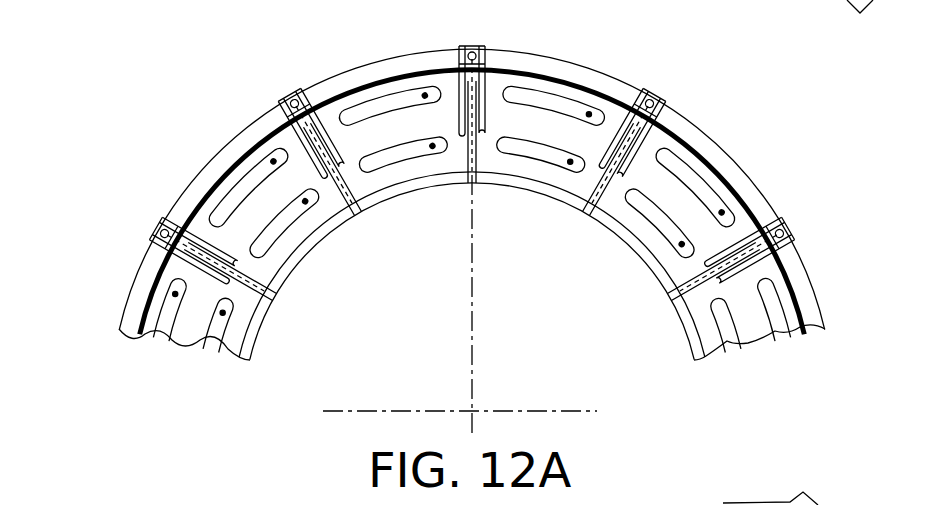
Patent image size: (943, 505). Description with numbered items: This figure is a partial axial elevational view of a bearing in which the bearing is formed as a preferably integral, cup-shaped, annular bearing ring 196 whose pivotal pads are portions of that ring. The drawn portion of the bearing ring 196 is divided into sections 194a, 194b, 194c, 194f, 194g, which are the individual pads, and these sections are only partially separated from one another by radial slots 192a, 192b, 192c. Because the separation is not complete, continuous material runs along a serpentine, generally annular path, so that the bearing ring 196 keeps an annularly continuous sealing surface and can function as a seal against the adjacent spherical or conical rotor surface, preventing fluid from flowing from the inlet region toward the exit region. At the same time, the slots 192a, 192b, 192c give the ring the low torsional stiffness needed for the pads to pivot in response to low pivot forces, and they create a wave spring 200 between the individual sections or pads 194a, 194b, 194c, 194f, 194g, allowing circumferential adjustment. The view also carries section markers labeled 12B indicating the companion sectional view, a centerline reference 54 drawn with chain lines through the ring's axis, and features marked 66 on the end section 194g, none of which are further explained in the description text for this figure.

The bearing ring 196 is at (792, 166).
The bearing ring section 194a is at (138, 262).
The bearing ring section 194b is at (223, 148).
The bearing ring section 194c is at (415, 50).
The bearing ring section 194f is at (690, 118).
The bearing ring section 194g is at (816, 349).
The radial slot 192a is at (283, 90).
The radial slot 192b is at (293, 88).
The radial slot 192c is at (350, 207).
The wave spring 200 is at (283, 76).
The slot 66 is at (777, 330).
The center axis 54 is at (472, 411).
The section line 12B is at (660, 88).